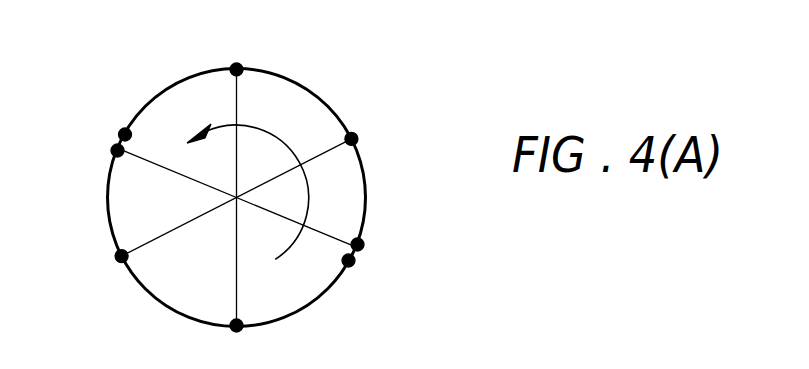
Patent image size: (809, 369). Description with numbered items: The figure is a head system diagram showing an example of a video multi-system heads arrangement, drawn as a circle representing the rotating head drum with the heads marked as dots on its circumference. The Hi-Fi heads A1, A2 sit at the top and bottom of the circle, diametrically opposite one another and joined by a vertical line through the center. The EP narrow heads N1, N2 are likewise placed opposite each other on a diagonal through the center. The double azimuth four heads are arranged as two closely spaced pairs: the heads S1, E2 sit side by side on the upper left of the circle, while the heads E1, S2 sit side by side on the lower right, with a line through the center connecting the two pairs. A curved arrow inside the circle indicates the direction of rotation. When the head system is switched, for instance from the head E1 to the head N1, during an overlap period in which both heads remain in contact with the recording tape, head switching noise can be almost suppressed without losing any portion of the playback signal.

The Hi-Fi head A1 is at (233, 57).
The Hi-Fi head A2 is at (239, 340).
The EP narrow head N1 is at (369, 135).
The EP narrow head N2 is at (104, 268).
The double azimuth head S1 is at (110, 125).
The double azimuth head S2 is at (361, 273).
The double azimuth head E1 is at (374, 246).
The double azimuth head E2 is at (98, 158).